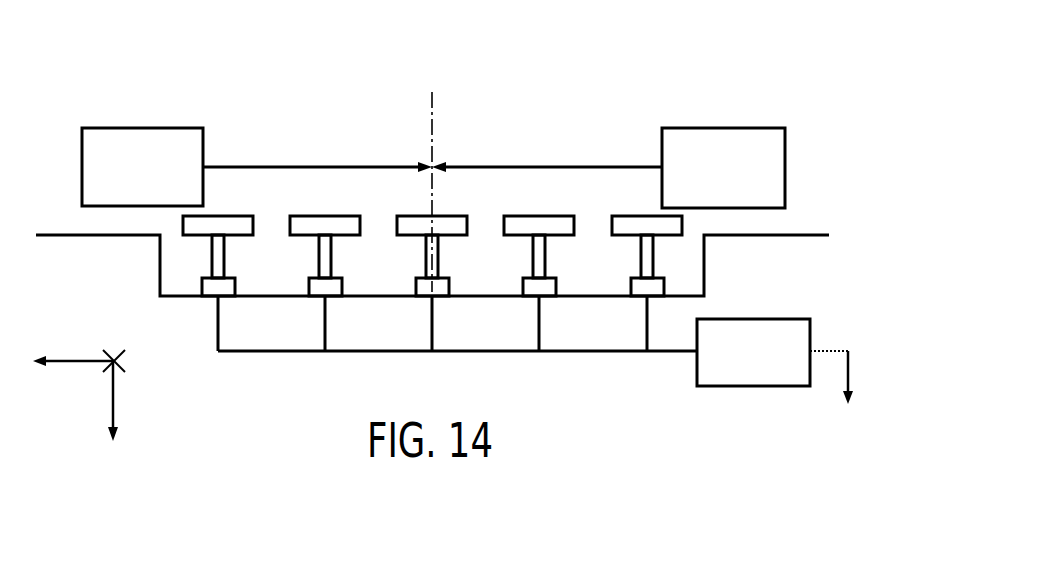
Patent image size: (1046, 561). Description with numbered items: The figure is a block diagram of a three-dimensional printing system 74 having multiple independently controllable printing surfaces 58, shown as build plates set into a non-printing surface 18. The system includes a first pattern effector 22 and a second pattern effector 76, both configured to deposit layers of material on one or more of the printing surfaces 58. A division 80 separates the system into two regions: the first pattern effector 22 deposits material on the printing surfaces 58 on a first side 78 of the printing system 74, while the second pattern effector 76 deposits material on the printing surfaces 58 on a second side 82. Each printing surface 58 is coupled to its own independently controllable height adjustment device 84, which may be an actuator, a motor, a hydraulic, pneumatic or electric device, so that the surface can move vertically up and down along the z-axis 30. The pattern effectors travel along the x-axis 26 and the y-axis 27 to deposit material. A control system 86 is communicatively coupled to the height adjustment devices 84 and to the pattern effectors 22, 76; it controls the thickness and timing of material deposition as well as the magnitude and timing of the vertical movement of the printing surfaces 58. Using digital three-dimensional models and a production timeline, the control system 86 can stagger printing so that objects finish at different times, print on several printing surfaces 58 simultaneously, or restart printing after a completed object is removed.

The 3D printing system 74 is at (92, 102).
The first pattern effector 22 is at (143, 128).
The second pattern effector 76 is at (722, 128).
The first side 78 is at (309, 167).
The second side 82 is at (551, 167).
The division 80 is at (432, 118).
The non-printing surface 18 is at (800, 235).
The printing surfaces 58 is at (325, 216).
The independently controllable height adjustment device 84 is at (319, 258).
The control system 86 is at (752, 319).
The x-axis 26 is at (77, 360).
The y-axis 27 is at (120, 357).
The z-axis 30 is at (115, 393).